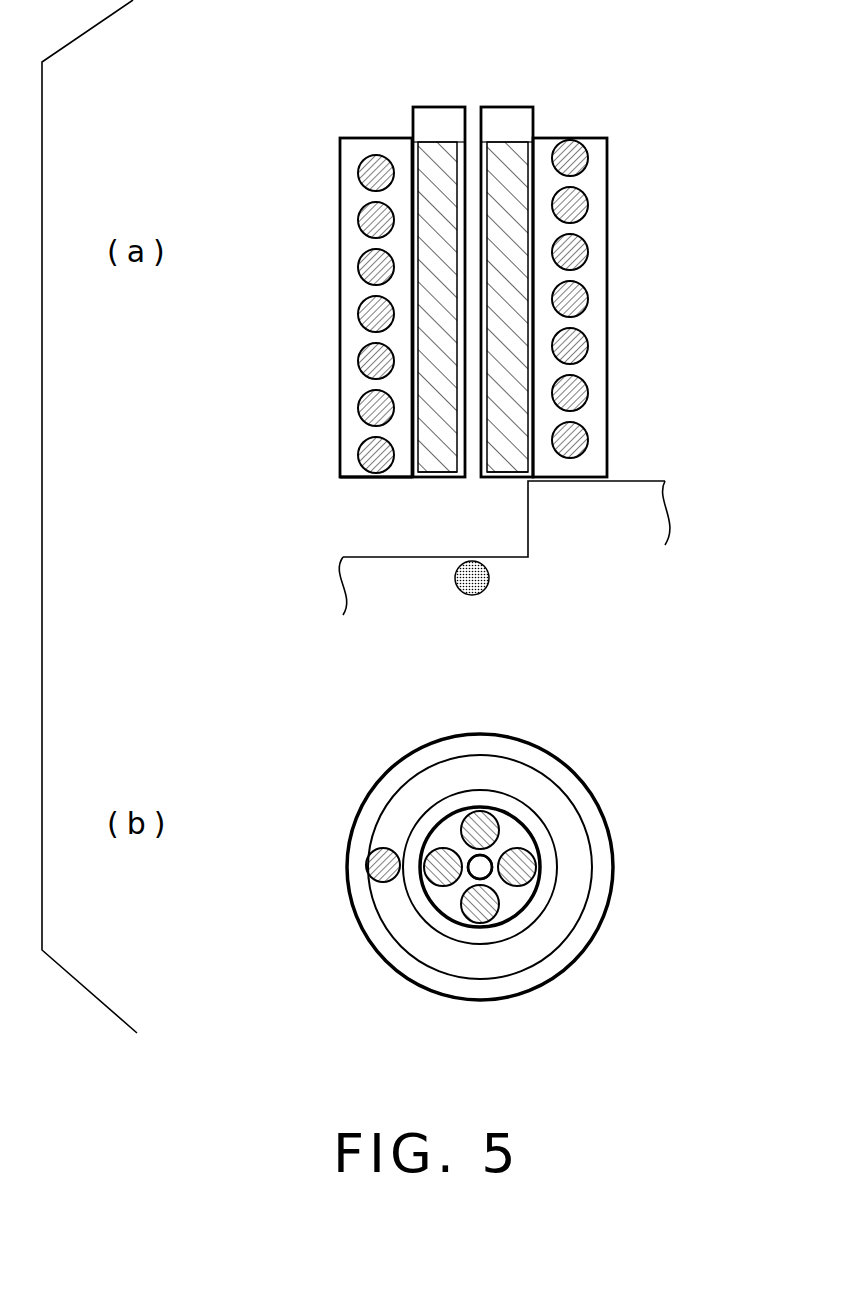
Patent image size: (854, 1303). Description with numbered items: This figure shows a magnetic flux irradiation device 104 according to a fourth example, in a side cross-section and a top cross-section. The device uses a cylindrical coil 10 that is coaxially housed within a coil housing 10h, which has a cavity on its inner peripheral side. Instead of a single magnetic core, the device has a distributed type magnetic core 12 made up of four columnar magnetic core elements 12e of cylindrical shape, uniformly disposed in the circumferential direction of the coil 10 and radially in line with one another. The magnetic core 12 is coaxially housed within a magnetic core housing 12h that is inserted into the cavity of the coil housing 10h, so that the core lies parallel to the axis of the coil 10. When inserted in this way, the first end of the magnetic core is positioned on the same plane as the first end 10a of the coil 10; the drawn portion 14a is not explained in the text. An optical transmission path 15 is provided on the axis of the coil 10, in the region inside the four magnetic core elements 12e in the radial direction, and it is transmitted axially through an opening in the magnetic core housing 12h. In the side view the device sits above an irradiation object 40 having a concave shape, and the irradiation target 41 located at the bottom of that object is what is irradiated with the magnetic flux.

The magnetic flux irradiation device 104 is at (336, 22).
The cylindrical coil 10 is at (588, 245).
The coil housing 10h is at (607, 178).
The first end of the coil 10a is at (352, 478).
The distributed type magnetic core 12 is at (493, 126).
The magnetic core elements 12e is at (442, 150).
The magnetic core housing 12h is at (534, 117).
The bottom portion 14a is at (502, 477).
The optical transmission path 15 is at (472, 297).
The irradiation object 40 is at (633, 481).
The irradiation target 41 is at (487, 592).